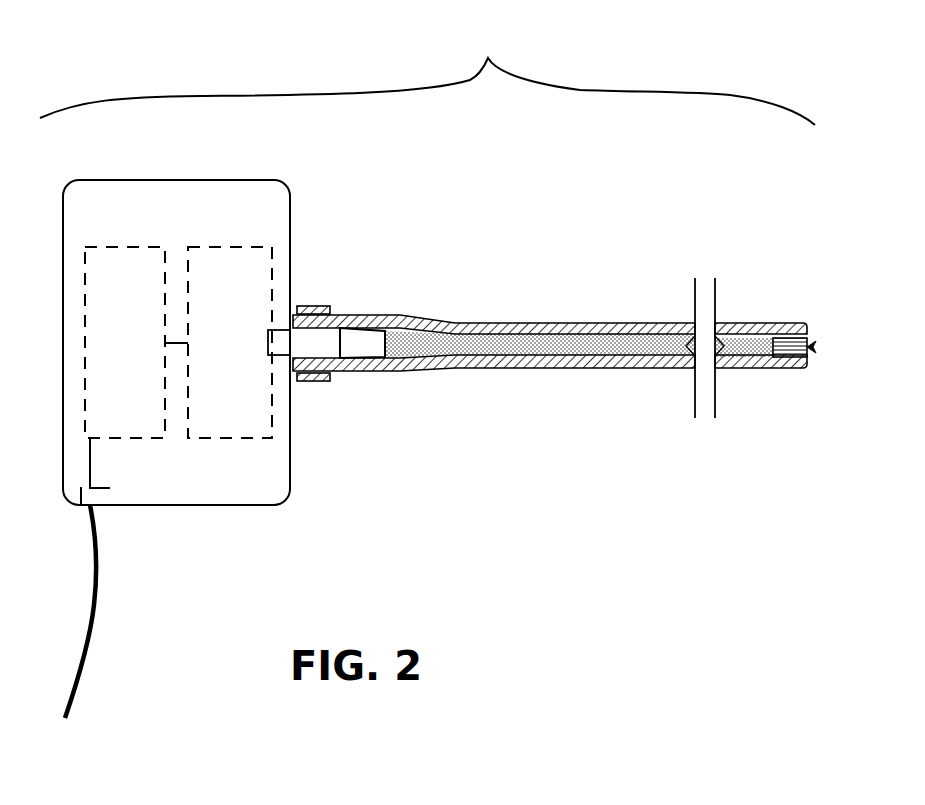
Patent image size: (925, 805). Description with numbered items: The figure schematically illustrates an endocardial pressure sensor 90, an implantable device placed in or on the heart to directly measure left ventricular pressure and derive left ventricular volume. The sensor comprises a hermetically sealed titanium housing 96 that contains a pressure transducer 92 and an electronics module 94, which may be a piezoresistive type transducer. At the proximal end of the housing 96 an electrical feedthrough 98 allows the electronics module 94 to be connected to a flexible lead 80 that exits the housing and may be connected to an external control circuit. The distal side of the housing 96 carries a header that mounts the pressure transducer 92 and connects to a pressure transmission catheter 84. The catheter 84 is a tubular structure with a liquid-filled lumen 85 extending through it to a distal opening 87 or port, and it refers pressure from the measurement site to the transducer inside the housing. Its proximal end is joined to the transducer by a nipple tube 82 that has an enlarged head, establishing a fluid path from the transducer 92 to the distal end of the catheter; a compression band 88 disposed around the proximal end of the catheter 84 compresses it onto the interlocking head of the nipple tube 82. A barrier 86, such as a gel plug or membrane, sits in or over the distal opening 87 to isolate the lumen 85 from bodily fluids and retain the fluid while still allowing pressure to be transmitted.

The endocardial pressure sensor 90 is at (427, 66).
The housing 96 is at (290, 487).
The electronics module 94 is at (124, 262).
The pressure transducer 92 is at (218, 268).
The electrical feedthrough 98 is at (113, 492).
The flexible lead 80 is at (97, 600).
The compression band 88 is at (315, 305).
The pressure transmission catheter 84 is at (562, 322).
The liquid-filled lumen 85 is at (540, 345).
The nipple tube 82 is at (365, 347).
The barrier 86 is at (790, 347).
The distal opening 87 is at (813, 344).